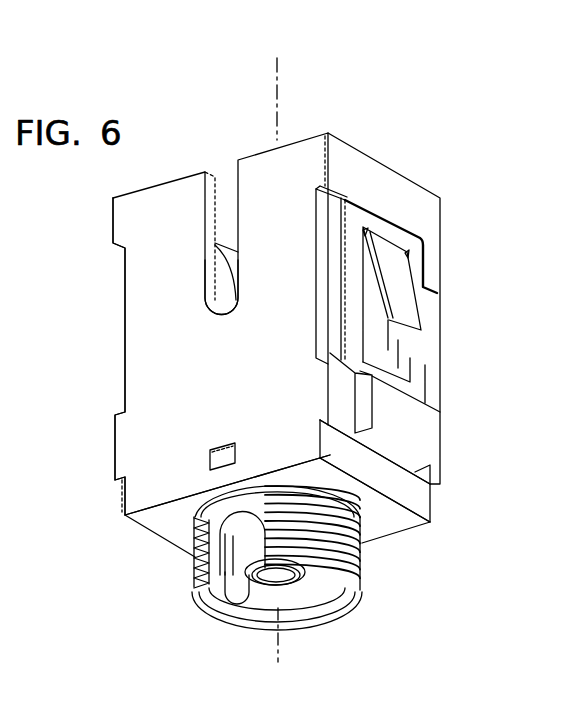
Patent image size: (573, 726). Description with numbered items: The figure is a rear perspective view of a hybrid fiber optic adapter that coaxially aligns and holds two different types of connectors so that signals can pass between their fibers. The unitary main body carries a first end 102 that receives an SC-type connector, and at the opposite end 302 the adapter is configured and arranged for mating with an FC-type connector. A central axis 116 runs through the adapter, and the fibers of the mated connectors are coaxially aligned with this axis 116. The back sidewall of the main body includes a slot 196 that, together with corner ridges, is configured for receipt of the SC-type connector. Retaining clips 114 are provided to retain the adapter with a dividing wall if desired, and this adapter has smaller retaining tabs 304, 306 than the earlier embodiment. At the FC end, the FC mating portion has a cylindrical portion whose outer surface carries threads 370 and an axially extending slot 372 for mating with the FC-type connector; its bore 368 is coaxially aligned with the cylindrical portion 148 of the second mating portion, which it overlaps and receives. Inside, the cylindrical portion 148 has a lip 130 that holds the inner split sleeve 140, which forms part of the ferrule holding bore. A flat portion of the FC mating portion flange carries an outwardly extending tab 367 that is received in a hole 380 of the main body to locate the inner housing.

The first end 102 is at (388, 168).
The retaining clips 114 is at (415, 322).
The central axis 116 is at (278, 77).
The internal lip 130 is at (262, 580).
The inner sleeve 140 is at (282, 583).
The cylindrical portion 148 is at (280, 588).
The slot 196 is at (240, 230).
The end 302 is at (347, 600).
The retaining tab 304 is at (115, 445).
The retaining tab 306 is at (413, 445).
The outwardly extending tab 367 is at (227, 460).
The bore 368 is at (327, 605).
The threads 370 is at (360, 572).
The axially extending slot 372 is at (233, 582).
The hole 380 is at (213, 448).